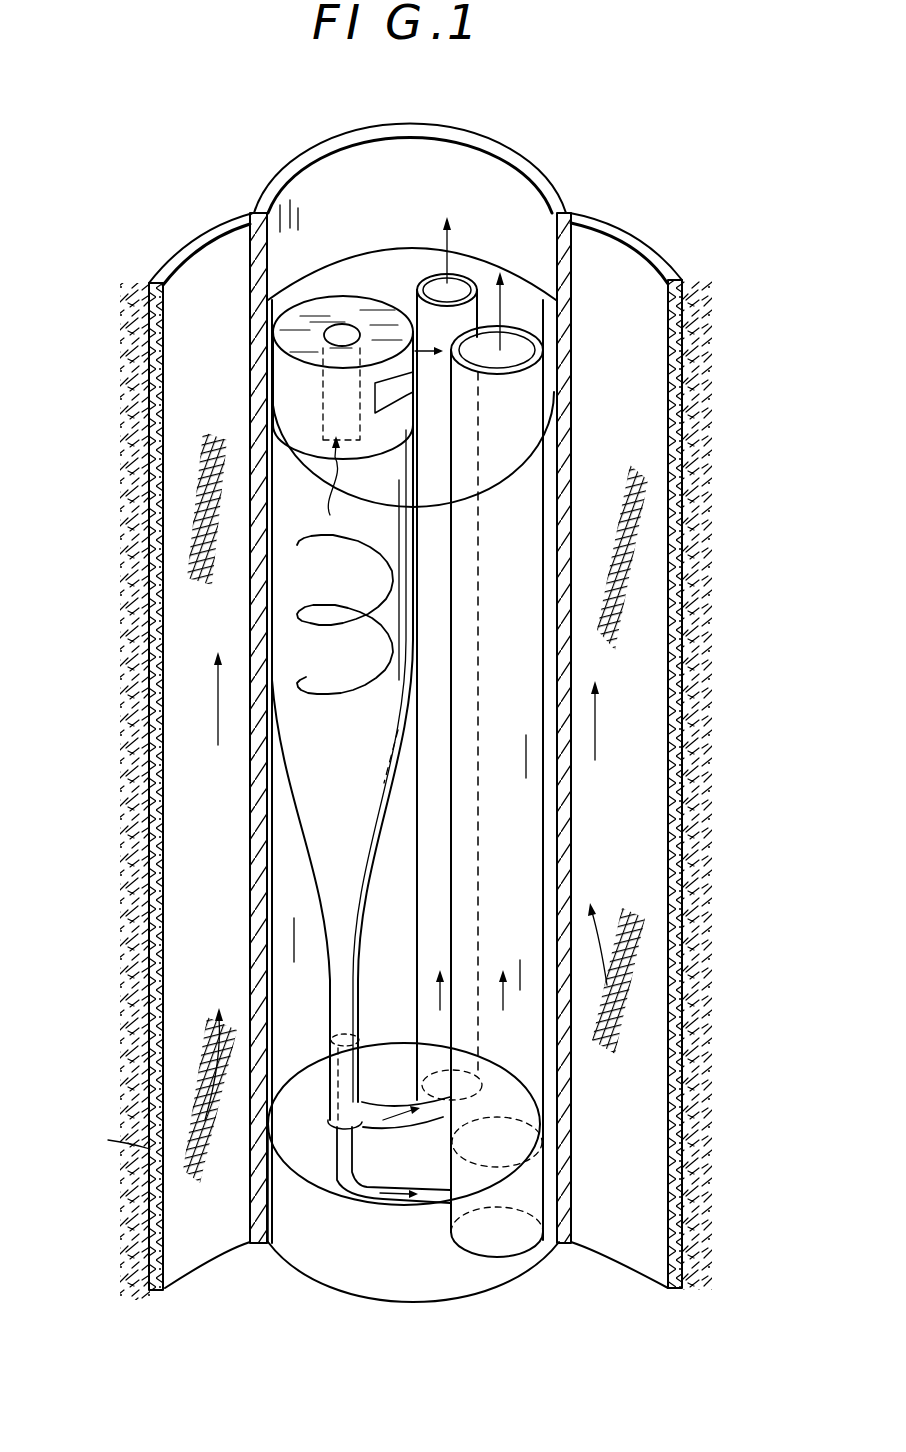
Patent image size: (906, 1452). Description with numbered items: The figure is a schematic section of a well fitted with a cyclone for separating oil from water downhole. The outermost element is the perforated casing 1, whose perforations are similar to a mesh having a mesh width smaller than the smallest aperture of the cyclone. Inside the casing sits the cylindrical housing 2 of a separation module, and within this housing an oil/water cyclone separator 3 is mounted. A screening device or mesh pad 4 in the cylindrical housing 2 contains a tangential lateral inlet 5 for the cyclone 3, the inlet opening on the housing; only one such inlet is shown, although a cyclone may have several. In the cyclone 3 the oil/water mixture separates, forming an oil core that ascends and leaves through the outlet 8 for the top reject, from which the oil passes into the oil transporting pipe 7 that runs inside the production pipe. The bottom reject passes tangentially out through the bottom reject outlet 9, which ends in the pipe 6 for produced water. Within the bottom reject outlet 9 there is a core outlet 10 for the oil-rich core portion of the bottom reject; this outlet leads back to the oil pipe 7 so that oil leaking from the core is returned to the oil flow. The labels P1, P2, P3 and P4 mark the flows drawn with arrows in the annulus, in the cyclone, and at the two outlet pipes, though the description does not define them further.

The perforated casing 1 is at (683, 678).
The cylindrical housing 2 is at (567, 860).
The oil/water cyclone separator 3 is at (318, 798).
The screening device or mesh pad 4 is at (515, 482).
The tangential lateral inlet 5 is at (327, 427).
The pipe for produced water 6 is at (440, 690).
The oil transporting pipe 7 is at (520, 514).
The outlet for the top reject 8 is at (337, 324).
The bottom reject outlet 9 is at (407, 1130).
The core outlet 10 is at (392, 1203).
The annulus pressure P1 is at (110, 1147).
The chamber pressure P2 is at (345, 565).
The gas outlet pressure P3 is at (440, 229).
The liquid outlet pressure P4 is at (502, 289).